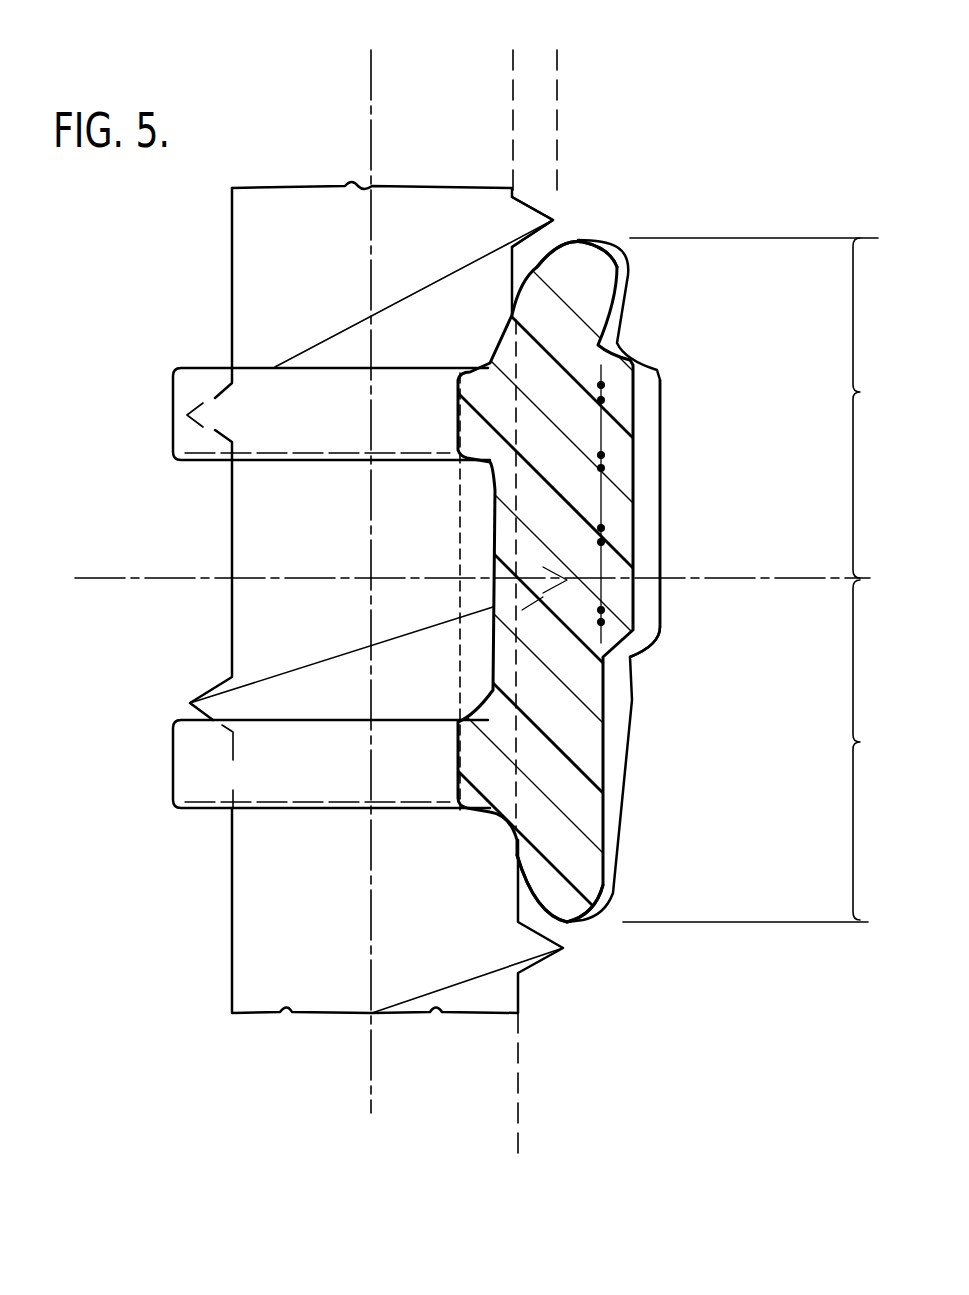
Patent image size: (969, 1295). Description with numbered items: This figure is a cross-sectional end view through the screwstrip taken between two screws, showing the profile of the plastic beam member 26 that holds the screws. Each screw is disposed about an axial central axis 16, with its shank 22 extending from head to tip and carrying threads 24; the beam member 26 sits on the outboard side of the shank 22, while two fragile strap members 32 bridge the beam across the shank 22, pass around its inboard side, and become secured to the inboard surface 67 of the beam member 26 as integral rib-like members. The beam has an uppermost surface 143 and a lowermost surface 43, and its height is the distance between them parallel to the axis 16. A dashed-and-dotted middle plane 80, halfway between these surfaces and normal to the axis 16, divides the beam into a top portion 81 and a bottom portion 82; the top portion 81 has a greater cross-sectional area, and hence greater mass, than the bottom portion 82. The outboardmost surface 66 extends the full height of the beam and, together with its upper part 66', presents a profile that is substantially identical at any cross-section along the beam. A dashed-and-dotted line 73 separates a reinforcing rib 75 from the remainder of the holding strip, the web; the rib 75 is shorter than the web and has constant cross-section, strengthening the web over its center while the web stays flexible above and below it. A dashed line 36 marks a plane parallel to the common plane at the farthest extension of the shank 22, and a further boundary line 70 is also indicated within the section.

The axial central axis 16 is at (371, 50).
The shank 22 is at (408, 186).
The threads 24 is at (533, 200).
The uppermost surface 143 is at (593, 240).
The beam member 26 is at (637, 457).
The strap members 32 is at (170, 437).
The middle plane 80 is at (105, 578).
The inner boundary line 70 is at (460, 545).
The dashed and dotted line 73 is at (620, 573).
The outboardmost surface 66 is at (642, 581).
The outer sleeve upper portion 66' is at (711, 503).
The reinforcing rib 75 is at (637, 637).
The inboard surface 67 is at (490, 625).
The top portion 81 is at (763, 408).
The bottom portion 82 is at (761, 751).
The lowermost surface 43 is at (568, 922).
The second dashed line 36 is at (523, 1087).